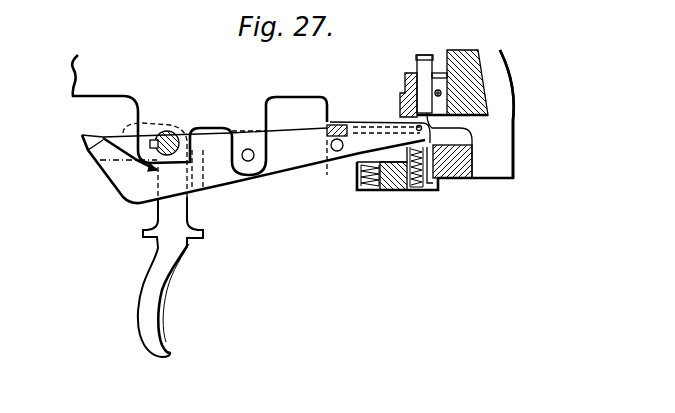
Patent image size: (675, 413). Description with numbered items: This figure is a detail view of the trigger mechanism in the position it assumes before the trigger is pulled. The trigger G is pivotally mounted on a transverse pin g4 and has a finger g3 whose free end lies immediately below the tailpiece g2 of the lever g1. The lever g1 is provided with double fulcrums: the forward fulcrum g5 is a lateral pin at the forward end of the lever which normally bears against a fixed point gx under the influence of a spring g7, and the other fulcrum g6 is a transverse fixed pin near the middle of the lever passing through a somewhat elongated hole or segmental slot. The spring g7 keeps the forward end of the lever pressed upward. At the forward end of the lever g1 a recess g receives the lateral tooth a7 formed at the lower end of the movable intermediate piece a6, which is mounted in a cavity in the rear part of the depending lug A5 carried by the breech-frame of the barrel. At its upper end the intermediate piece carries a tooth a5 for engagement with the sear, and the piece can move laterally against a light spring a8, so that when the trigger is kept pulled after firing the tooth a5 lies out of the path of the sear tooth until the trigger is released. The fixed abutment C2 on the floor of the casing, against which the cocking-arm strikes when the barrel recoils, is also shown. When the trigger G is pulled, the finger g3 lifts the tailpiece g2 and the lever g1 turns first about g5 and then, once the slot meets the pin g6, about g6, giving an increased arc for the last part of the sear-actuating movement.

The recess g is at (375, 124).
The lever g1 is at (253, 165).
The tailpiece g2 is at (83, 137).
The finger g3 is at (128, 147).
The transverse pin g4 is at (160, 163).
The forward fulcrum g5 is at (335, 151).
The fulcrum pin g6 is at (247, 161).
The spring g7 is at (420, 143).
The fixed point gx is at (338, 120).
The trigger G is at (170, 277).
The tooth a5 is at (430, 53).
The intermediate piece a6 is at (417, 77).
The lateral tooth a7 is at (487, 186).
The light spring a8 is at (443, 97).
The depending lug A5 is at (480, 103).
The fixed abutment C2 is at (473, 153).